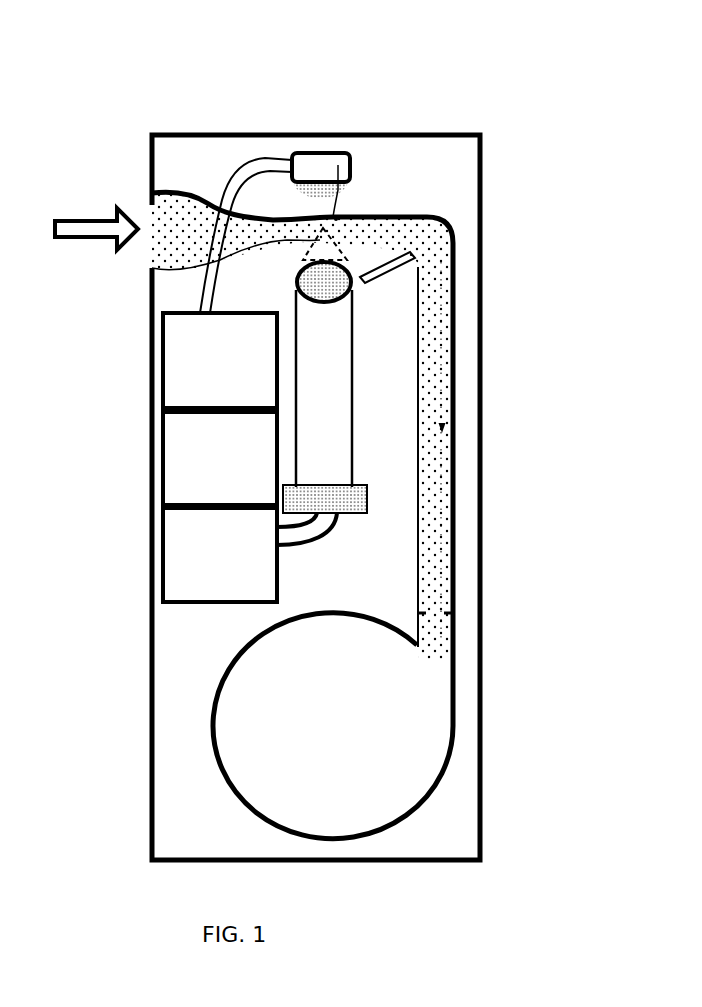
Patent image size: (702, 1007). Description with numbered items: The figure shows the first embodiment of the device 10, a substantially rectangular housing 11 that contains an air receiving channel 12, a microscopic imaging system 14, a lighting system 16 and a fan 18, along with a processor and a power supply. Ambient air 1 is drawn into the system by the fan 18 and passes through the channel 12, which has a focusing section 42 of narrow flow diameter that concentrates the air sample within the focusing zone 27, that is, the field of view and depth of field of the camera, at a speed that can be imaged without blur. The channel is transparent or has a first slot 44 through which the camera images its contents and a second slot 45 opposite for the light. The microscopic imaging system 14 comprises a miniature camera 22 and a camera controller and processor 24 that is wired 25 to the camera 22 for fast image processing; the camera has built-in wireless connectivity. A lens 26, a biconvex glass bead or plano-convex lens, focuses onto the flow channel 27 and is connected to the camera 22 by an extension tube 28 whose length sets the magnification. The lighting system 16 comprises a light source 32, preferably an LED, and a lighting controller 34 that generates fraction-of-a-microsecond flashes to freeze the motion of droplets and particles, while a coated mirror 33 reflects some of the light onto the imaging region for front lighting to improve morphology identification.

The air 1 is at (73, 218).
The device 10 is at (519, 75).
The housing 11 is at (481, 445).
The air receiving channel 12 is at (187, 192).
The microscopic imaging system 14 is at (365, 365).
The lighting system 16 is at (308, 153).
The fan 18 is at (437, 671).
The camera 22 is at (227, 165).
The camera controller and processor 24 is at (175, 562).
The wiring 25 is at (307, 547).
The lens 26 is at (347, 266).
The flow channel focusing zone 27 is at (360, 210).
The extension tube 28 is at (337, 413).
The light source 32 is at (338, 165).
The coated mirror 33 is at (365, 285).
The lighting controller 34 is at (177, 362).
The focusing section 42 is at (347, 247).
The first slot 44 is at (337, 218).
The second slot 45 is at (305, 245).